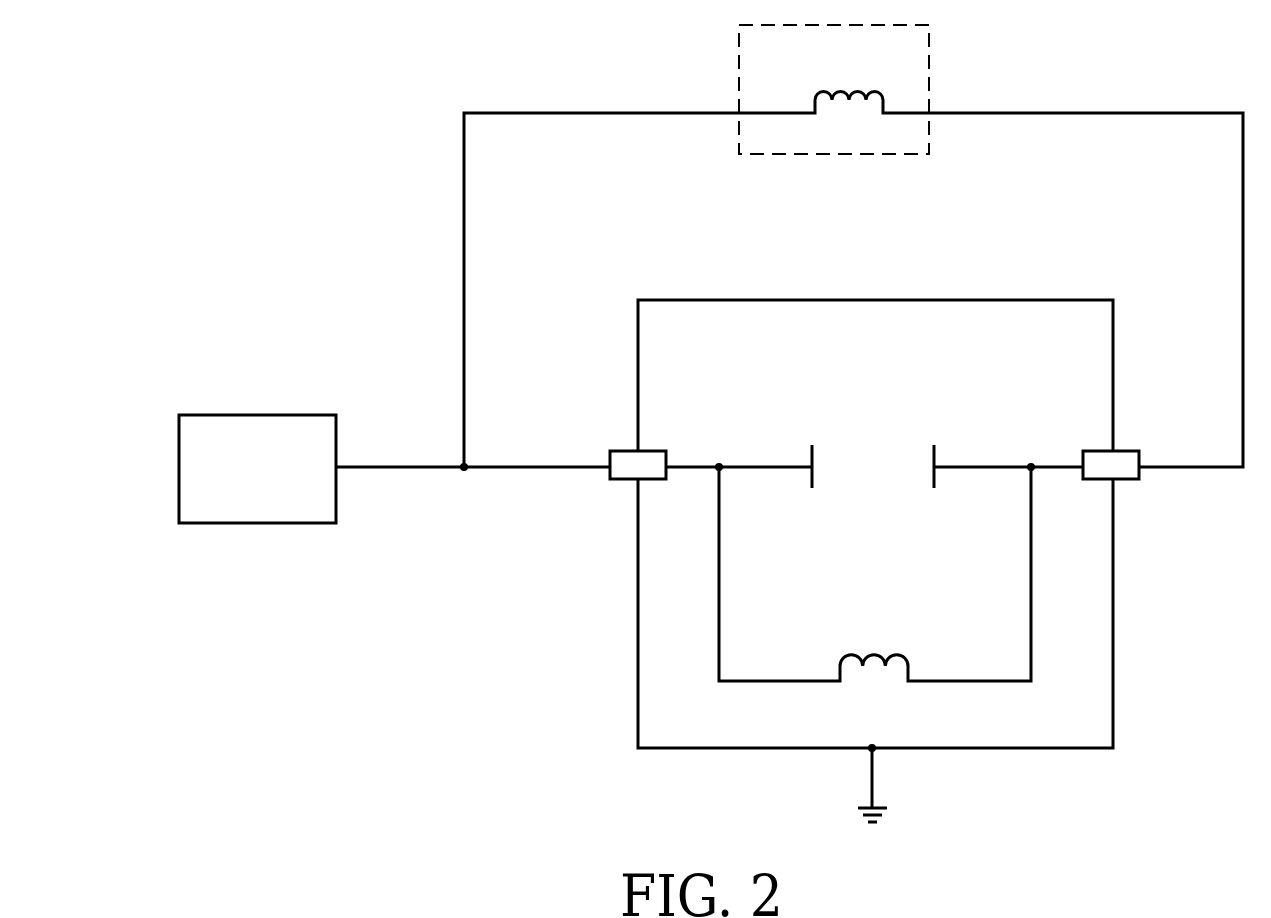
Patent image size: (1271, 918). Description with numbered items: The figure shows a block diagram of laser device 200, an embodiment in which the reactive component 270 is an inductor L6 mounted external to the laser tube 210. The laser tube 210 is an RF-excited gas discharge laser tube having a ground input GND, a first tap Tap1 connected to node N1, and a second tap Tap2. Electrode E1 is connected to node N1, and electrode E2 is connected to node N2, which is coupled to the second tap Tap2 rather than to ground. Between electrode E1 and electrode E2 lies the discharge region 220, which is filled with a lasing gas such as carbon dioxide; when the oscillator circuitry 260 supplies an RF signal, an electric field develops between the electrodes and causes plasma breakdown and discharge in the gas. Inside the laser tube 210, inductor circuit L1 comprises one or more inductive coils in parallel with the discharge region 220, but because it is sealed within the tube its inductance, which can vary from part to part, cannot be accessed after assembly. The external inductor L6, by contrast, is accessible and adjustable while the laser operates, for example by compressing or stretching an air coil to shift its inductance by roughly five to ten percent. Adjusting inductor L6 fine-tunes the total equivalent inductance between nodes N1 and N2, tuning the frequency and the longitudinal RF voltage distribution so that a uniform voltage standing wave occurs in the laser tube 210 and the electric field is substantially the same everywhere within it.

The laser device 200 is at (525, 58).
The laser tube 210 is at (878, 300).
The discharge region 220 is at (872, 407).
The oscillator circuitry 260 is at (277, 515).
The reactive component 270 is at (798, 66).
The inductor L6 is at (849, 78).
The inductor circuit L1 is at (874, 645).
The first tap Tap1 is at (620, 451).
The second tap Tap2 is at (1120, 451).
The node N1 is at (716, 464).
The node N2 is at (1033, 464).
The electrode E1 is at (808, 464).
The electrode E2 is at (940, 464).
The ground input GND is at (873, 769).